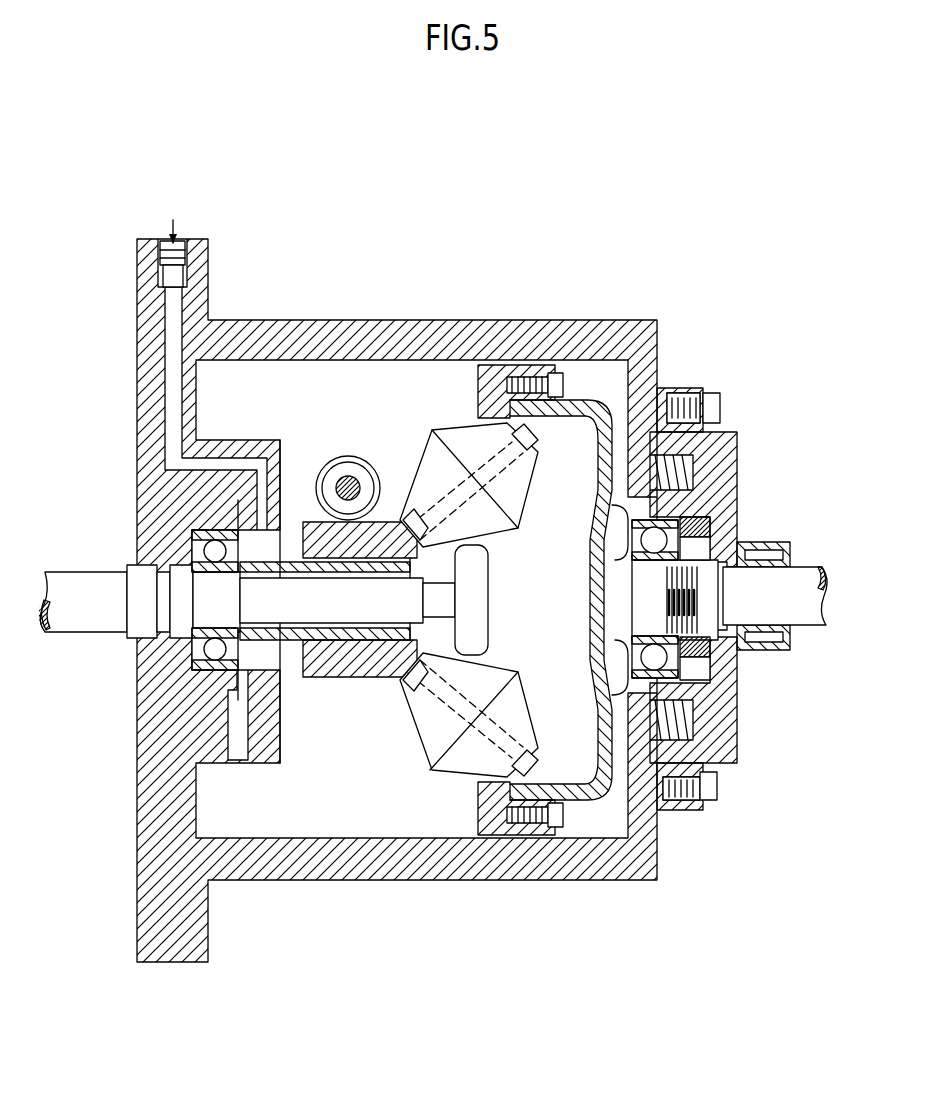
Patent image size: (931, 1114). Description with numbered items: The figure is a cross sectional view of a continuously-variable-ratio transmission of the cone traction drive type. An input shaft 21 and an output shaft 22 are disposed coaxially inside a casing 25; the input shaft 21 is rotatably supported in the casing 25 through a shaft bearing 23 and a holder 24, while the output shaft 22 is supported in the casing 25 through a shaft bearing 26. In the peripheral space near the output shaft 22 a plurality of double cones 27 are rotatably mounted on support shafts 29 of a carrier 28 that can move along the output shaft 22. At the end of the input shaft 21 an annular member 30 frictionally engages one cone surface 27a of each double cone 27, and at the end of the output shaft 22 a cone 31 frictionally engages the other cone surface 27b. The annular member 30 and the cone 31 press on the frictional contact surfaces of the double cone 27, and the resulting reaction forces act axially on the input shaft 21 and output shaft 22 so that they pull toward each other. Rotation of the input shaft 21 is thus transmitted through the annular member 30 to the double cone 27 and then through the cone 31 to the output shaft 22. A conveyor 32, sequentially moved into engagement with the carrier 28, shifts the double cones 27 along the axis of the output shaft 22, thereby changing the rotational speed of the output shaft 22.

The input shaft 21 is at (805, 620).
The output shaft 22 is at (80, 632).
The shaft bearing 23 is at (698, 528).
The holder 24 is at (700, 498).
The casing 25 is at (278, 328).
The shaft bearing 26 is at (183, 544).
The double cone 27 is at (447, 423).
The cone surface 27a is at (517, 487).
The cone surface 27b is at (425, 482).
The carrier 28 is at (335, 672).
The support shaft 29 is at (468, 700).
The annular member 30 is at (490, 365).
The cone 31 is at (480, 578).
The conveyor 32 is at (332, 457).